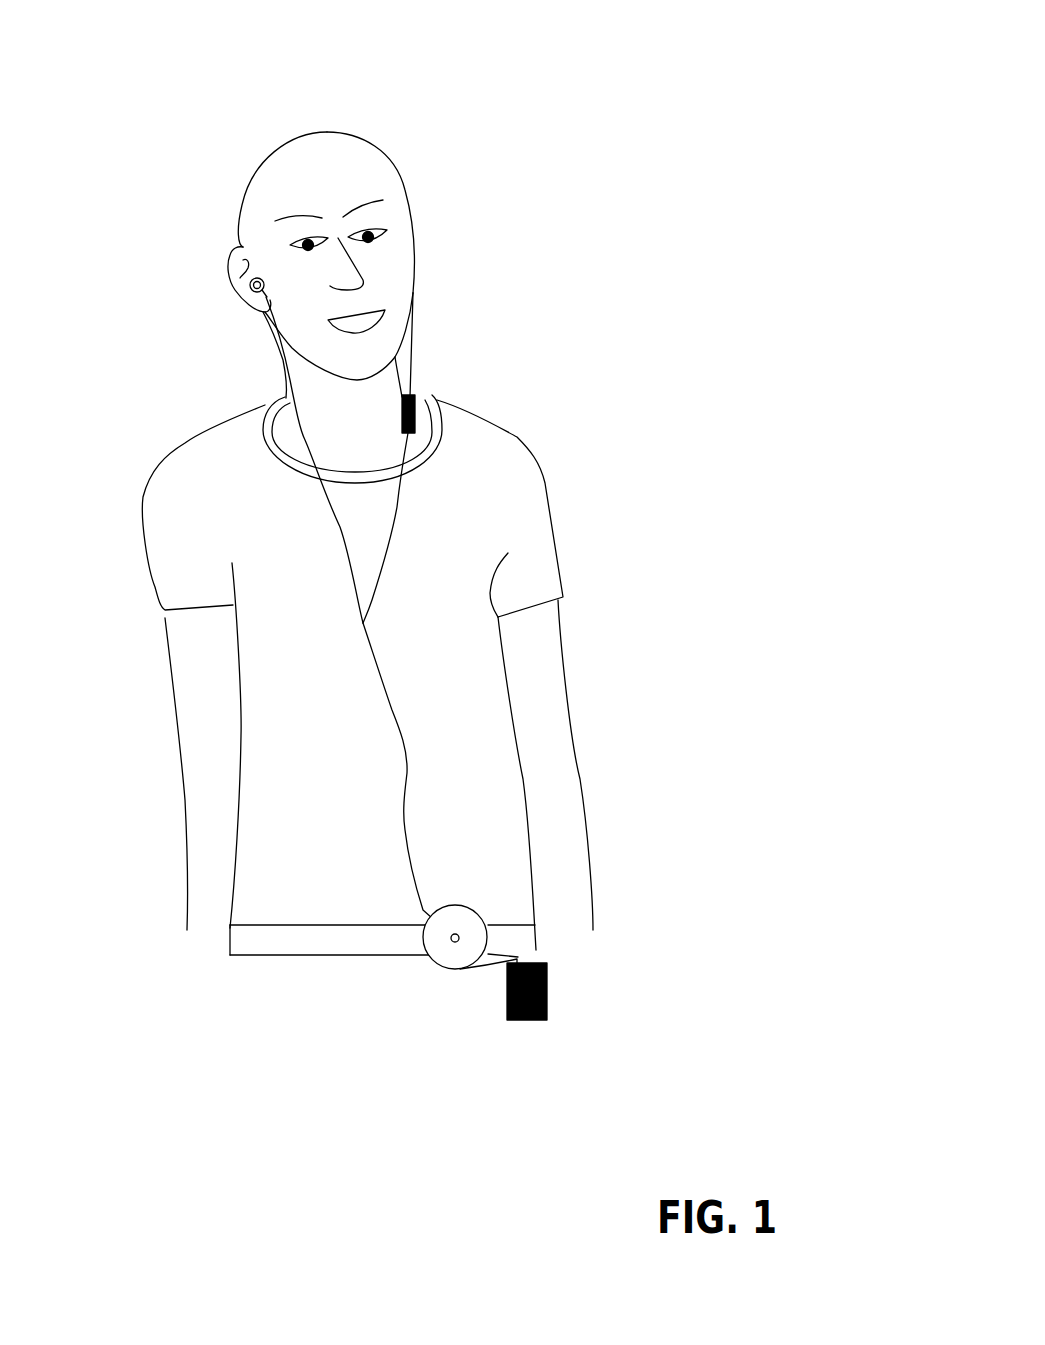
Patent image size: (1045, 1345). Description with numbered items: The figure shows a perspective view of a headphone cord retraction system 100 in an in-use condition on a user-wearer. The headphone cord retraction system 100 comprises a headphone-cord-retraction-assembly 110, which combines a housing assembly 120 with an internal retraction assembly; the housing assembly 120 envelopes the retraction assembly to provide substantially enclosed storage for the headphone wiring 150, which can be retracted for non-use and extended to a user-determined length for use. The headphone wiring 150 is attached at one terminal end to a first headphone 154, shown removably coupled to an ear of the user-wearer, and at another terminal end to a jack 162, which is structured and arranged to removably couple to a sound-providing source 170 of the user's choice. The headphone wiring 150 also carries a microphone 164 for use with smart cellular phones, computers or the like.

The headphone cord retraction system 100 is at (553, 99).
The headphone-cord-retraction-assembly 110 is at (432, 982).
The housing assembly 120 is at (433, 942).
The headphone wiring 150 is at (420, 346).
The first headphone 154 is at (245, 282).
The jack 162 is at (527, 957).
The microphone 164 is at (419, 414).
The sound-providing source 170 is at (532, 1024).